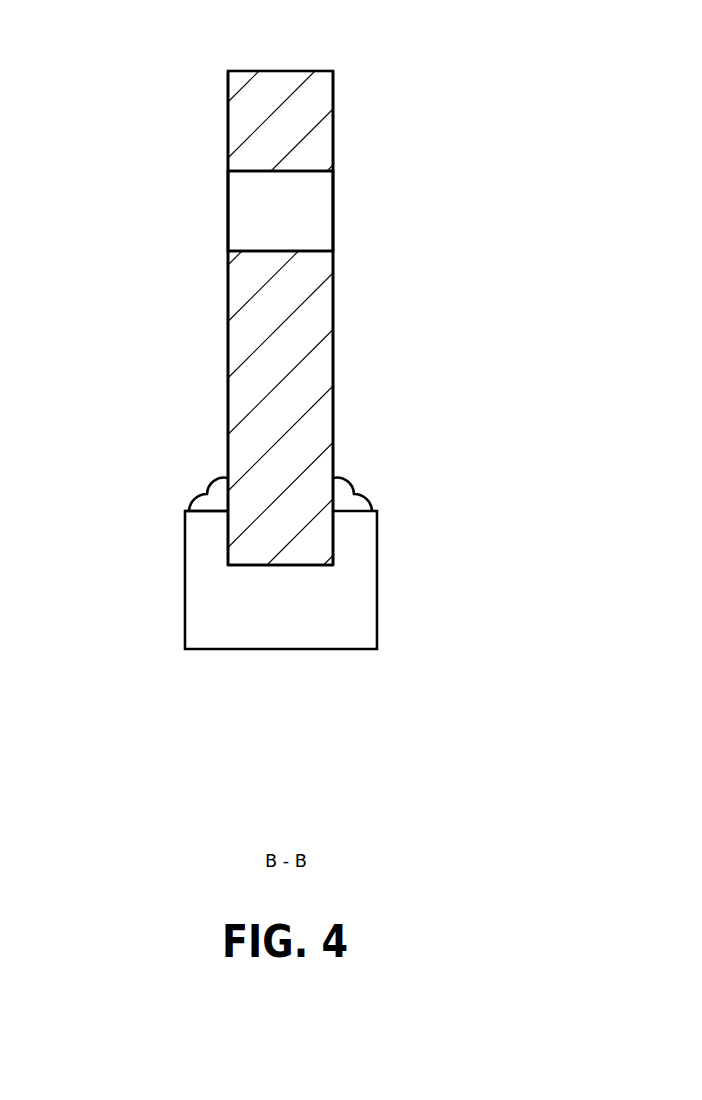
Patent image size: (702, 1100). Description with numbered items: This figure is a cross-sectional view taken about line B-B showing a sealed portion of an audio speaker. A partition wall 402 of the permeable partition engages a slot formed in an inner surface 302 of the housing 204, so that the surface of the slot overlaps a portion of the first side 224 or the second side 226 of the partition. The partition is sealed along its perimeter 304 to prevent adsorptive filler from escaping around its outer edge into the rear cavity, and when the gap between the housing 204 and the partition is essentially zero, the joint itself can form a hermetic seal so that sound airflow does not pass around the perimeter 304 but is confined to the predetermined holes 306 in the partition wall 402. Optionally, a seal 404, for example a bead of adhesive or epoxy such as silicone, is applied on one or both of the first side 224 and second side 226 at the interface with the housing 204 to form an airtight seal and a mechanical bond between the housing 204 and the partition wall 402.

The partition wall 402 is at (310, 103).
The second side 226 is at (228, 122).
The first side 224 is at (333, 313).
The holes 306 is at (277, 172).
The housing 204 is at (222, 638).
The inner surface 302 is at (212, 513).
The seal 404 is at (357, 485).
The perimeter 304 is at (285, 566).